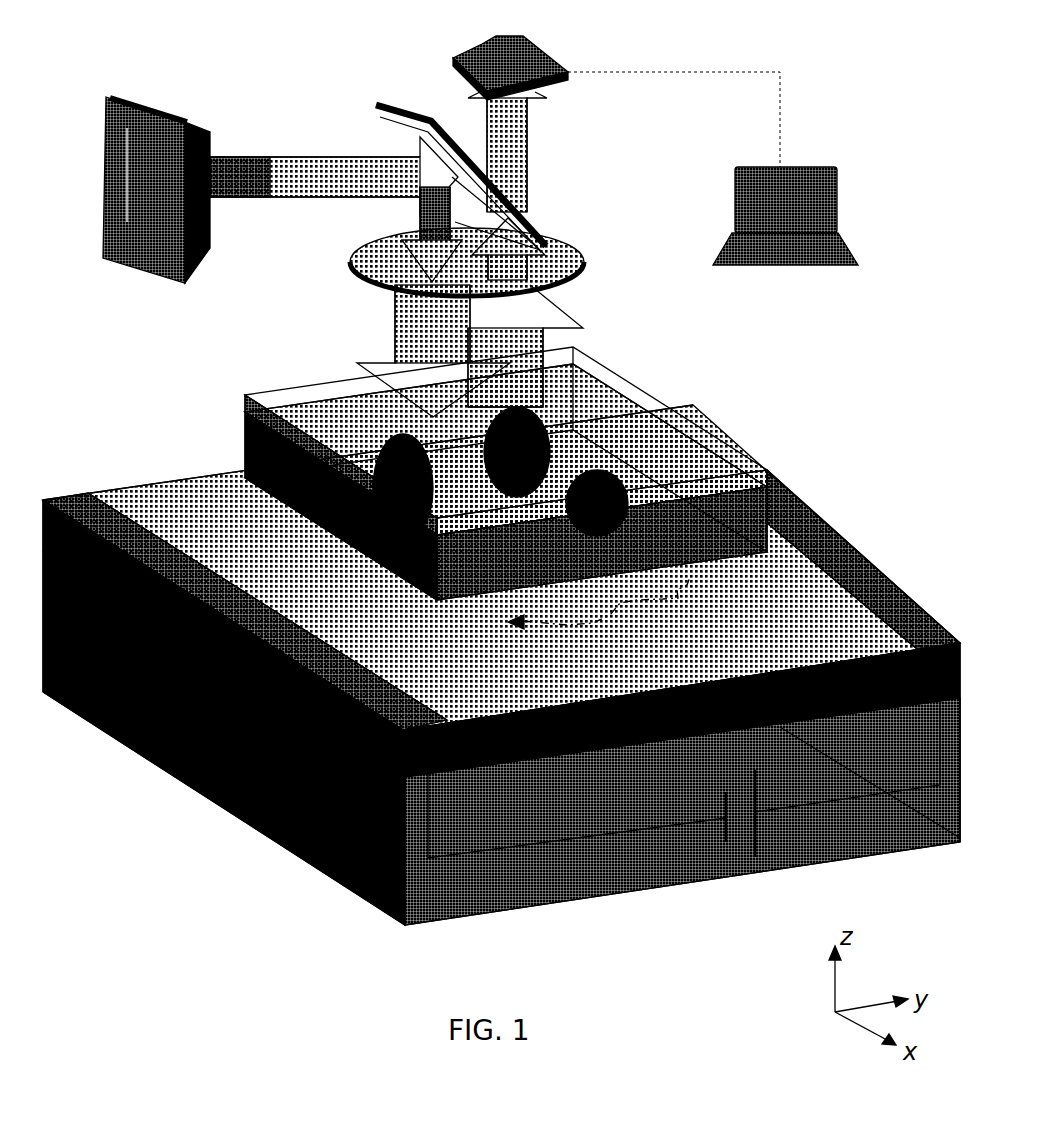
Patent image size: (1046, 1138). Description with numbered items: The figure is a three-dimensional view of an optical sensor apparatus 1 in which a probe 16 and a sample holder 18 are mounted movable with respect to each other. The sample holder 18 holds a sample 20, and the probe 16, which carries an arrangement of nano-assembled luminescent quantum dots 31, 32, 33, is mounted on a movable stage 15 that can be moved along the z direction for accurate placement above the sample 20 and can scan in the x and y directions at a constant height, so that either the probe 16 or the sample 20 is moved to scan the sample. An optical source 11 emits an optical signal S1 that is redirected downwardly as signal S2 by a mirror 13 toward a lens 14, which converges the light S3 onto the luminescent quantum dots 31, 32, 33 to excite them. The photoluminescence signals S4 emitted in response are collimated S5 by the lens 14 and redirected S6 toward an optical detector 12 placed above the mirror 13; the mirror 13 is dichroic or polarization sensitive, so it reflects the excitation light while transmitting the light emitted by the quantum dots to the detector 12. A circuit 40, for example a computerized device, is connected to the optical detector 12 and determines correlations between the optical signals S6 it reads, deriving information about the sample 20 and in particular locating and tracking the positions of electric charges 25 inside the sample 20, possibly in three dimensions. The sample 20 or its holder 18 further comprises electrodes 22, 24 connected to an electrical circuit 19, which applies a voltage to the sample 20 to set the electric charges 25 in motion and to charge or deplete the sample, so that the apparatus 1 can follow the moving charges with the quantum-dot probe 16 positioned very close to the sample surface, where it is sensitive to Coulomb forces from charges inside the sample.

The optical sensor apparatus 1 is at (242, 936).
The optical source 11 is at (200, 255).
The optical detector 12 is at (562, 62).
The mirror 13 is at (390, 100).
The lens 14 is at (585, 258).
The movable stage 15 is at (772, 473).
The probe 16 is at (276, 498).
The sample holder 18 is at (252, 836).
The electrical circuit 19 is at (684, 789).
The sample 20 is at (803, 608).
The electrode 22 is at (250, 614).
The electrode 24 is at (890, 612).
The electric charges 25 is at (598, 624).
The luminescent quantum dot 31 is at (434, 470).
The luminescent quantum dot 32 is at (548, 446).
The luminescent quantum dot 33 is at (622, 512).
The circuit 40 is at (785, 216).
The optical signal S1 is at (296, 150).
The redirected optical signal S2 is at (400, 268).
The converged light S3 is at (385, 330).
The response signals S4 is at (585, 325).
The collimated signals S5 is at (560, 268).
The detected optical signals S6 is at (530, 174).